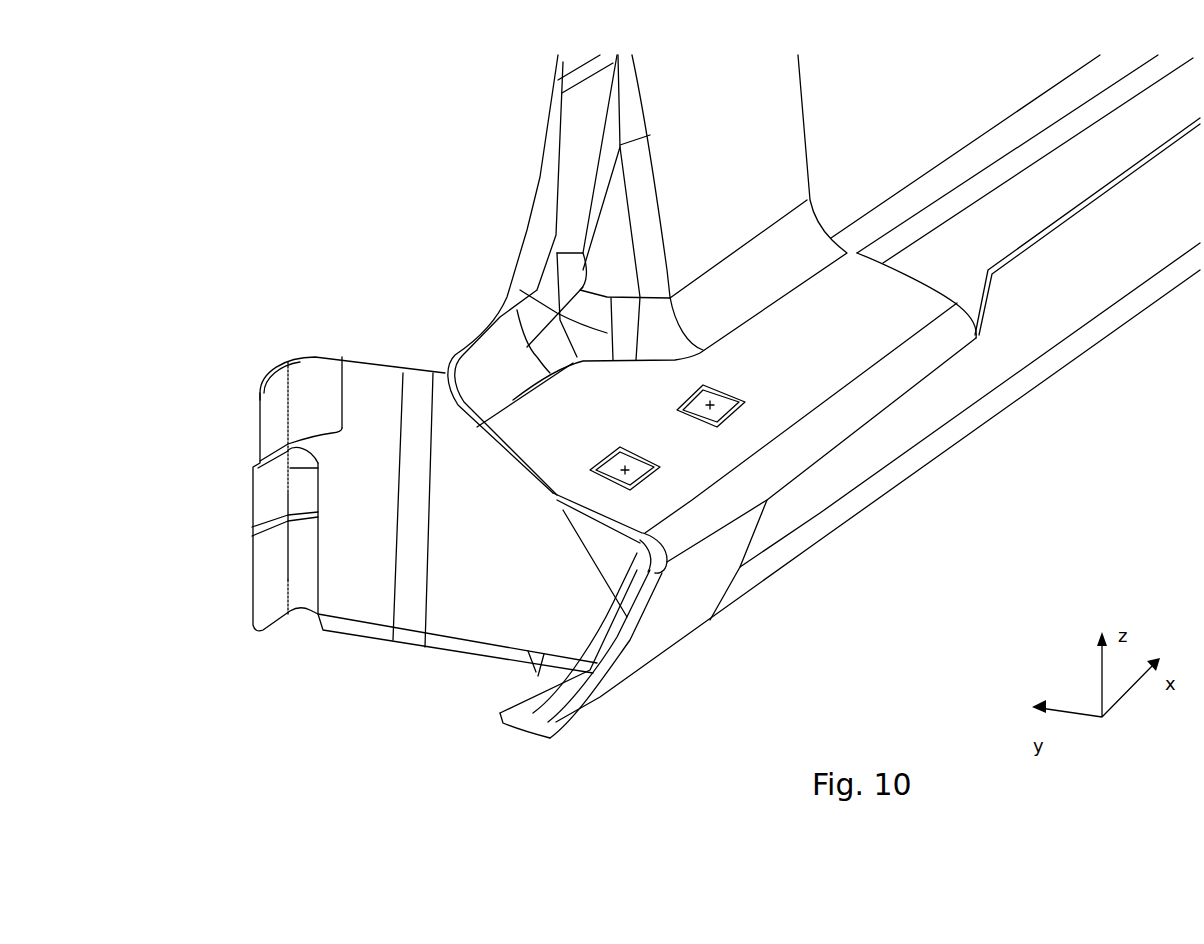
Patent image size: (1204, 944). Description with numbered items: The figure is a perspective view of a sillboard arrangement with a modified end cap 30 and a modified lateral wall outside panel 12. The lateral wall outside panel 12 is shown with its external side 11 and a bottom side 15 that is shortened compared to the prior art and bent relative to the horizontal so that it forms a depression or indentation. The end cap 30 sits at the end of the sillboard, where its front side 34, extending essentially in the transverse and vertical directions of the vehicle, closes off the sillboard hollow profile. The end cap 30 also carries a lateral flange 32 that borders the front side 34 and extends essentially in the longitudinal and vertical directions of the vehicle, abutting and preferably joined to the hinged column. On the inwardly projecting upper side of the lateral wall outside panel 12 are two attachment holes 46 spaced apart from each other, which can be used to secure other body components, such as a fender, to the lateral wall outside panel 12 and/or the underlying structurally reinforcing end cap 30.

The external side 11 is at (877, 480).
The lateral wall outside panel 12 is at (1008, 500).
The bottom side 15 is at (517, 708).
The end cap 30 is at (347, 758).
The lateral flange 32 is at (263, 610).
The front side 34 is at (355, 375).
The attachment holes 46 is at (608, 465).